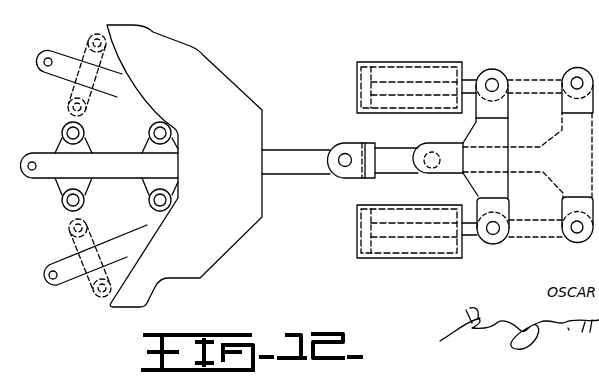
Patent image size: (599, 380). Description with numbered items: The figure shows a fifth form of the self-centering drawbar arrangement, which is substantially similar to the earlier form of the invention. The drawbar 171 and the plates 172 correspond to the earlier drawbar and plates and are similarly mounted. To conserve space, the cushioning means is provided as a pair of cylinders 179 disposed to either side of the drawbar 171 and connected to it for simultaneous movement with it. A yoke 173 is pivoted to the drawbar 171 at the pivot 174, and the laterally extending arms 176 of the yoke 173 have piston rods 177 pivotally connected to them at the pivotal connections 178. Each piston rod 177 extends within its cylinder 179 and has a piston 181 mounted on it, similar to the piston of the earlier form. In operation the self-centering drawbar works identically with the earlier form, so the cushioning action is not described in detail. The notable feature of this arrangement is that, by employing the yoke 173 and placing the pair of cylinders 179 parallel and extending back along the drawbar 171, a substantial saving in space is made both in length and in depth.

The drawbar 171 is at (281, 172).
The plates 172 is at (223, 264).
The yoke 173 is at (390, 153).
The pivot 174 is at (342, 154).
The laterally extending arms 176 is at (500, 110).
The piston rods 177 is at (467, 80).
The pivotal connection 178 is at (496, 82).
The cylinders 179 is at (404, 62).
The piston 181 is at (366, 72).